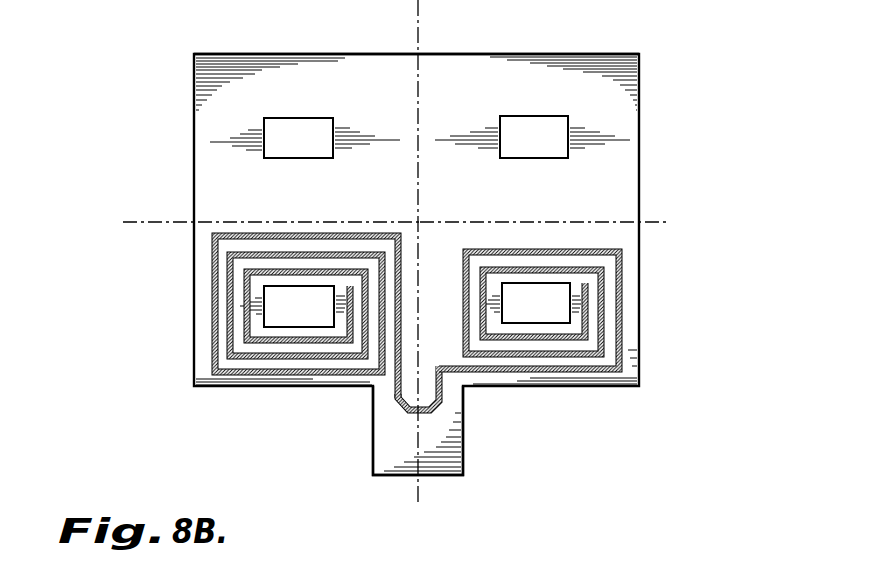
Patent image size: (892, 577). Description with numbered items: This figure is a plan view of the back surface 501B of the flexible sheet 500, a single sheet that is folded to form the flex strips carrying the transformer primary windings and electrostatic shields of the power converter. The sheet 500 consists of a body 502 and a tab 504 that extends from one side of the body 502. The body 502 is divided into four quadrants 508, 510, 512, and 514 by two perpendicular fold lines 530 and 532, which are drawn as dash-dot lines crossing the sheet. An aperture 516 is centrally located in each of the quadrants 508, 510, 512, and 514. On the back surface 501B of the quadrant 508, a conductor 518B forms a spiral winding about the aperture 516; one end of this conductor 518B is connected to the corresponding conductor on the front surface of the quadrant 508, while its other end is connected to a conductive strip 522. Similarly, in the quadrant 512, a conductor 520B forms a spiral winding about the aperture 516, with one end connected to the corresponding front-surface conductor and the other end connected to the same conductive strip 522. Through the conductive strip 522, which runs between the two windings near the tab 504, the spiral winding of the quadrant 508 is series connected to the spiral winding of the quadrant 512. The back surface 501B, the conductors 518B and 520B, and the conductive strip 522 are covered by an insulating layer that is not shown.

The flexible sheet 500 is at (674, 72).
The body 502 is at (661, 197).
The tab 504 is at (463, 460).
The quadrant 508 is at (196, 367).
The quadrant 510 is at (193, 120).
The quadrant 512 is at (641, 312).
The quadrant 514 is at (640, 127).
The aperture 516 is at (284, 140).
The conductor 518B is at (214, 325).
The conductor 520B is at (623, 285).
The conductive strip 522 is at (442, 402).
The fold line 530 is at (141, 222).
The back surface 501B is at (544, 209).
The fold line 532 is at (422, 500).